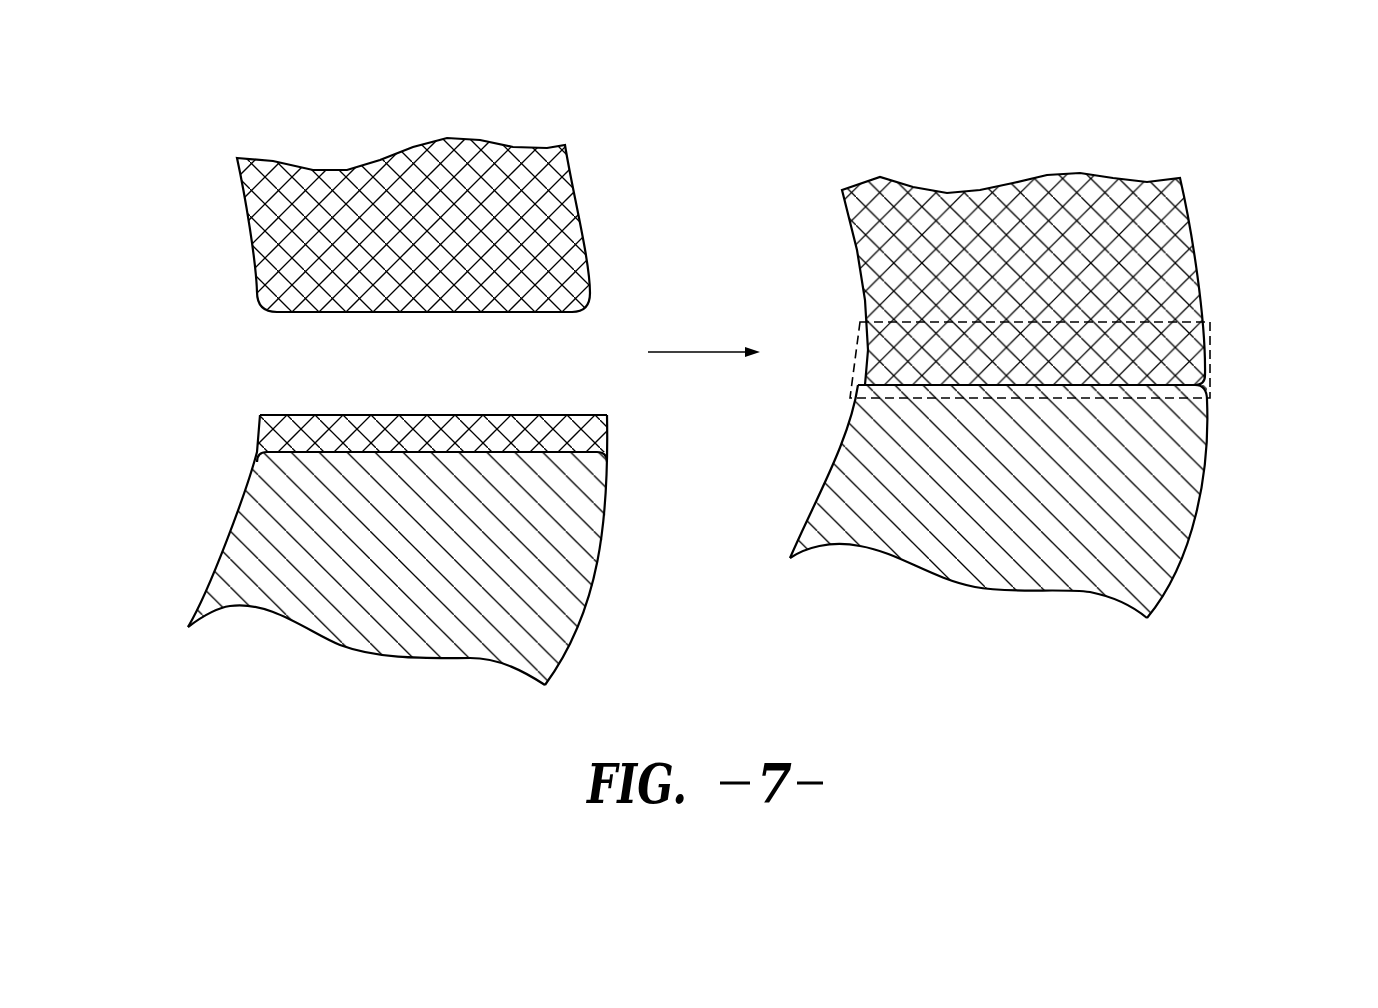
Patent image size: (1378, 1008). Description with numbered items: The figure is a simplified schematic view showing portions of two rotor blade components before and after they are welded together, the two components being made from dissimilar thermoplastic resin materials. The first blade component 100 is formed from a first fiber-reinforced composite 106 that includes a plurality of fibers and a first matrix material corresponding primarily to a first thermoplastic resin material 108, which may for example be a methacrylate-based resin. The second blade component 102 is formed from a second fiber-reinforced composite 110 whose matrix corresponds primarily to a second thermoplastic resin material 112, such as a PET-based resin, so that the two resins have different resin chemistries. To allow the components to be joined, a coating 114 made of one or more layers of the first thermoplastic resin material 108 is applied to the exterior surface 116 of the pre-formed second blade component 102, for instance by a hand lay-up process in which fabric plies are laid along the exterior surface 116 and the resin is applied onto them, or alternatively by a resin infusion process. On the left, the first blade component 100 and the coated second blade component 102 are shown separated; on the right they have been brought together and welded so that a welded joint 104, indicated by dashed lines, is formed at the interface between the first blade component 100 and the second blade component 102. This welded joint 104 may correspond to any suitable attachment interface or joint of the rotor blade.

The first blade component 100 is at (177, 133).
The second blade component 102 is at (182, 502).
The welded joint 104 is at (1212, 358).
The first fiber-reinforced composite 106 is at (577, 172).
The first thermoplastic resin material 108 is at (545, 225).
The second fiber-reinforced composite 110 is at (427, 660).
The second thermoplastic resin material 112 is at (540, 612).
The coating 114 is at (303, 414).
The exterior surface 116 is at (492, 448).